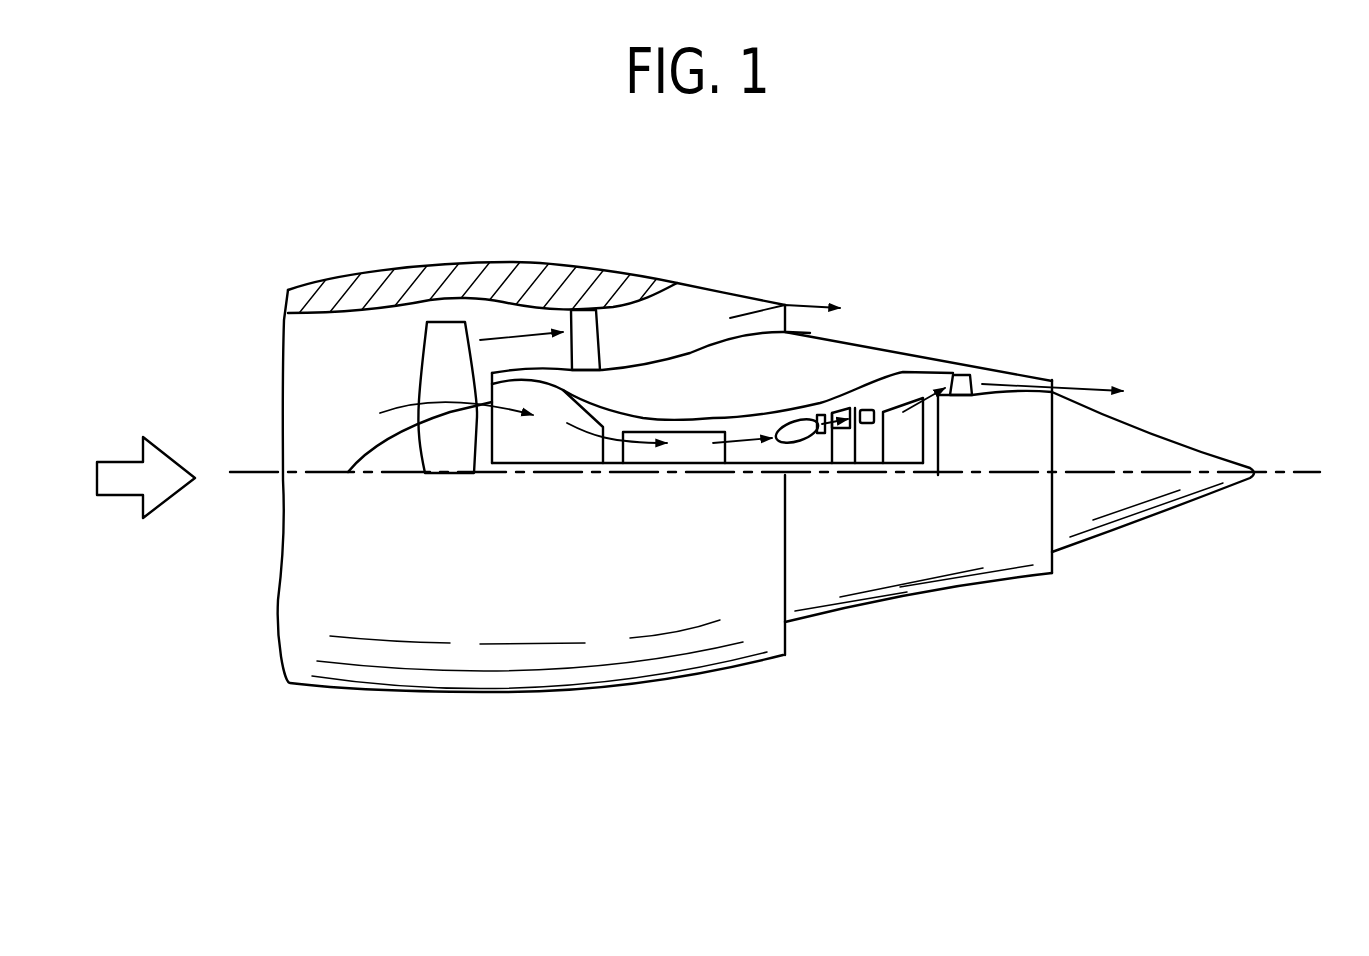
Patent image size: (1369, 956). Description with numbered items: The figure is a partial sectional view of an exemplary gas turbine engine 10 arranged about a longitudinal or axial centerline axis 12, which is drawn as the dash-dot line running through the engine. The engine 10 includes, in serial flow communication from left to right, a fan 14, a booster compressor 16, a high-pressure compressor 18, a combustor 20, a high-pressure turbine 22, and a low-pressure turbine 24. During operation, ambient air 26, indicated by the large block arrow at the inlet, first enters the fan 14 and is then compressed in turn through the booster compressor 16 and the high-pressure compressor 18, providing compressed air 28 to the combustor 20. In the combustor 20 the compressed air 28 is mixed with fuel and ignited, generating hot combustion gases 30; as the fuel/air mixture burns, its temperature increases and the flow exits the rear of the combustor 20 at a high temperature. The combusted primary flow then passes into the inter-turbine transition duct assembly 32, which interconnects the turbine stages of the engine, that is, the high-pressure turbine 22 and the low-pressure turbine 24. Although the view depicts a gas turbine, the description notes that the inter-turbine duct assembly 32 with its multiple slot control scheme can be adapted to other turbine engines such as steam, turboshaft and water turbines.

The gas turbine engine 10 is at (335, 198).
The longitudinal or axial centerline axis 12 is at (1278, 473).
The fan 14 is at (430, 357).
The booster compressor 16 is at (556, 452).
The high-pressure compressor 18 is at (681, 450).
The combustor 20 is at (785, 420).
The high-pressure turbine 22 is at (845, 412).
The low-pressure turbine 24 is at (903, 402).
The ambient air 26 is at (118, 462).
The compressed air 28 is at (740, 443).
The hot combustion gases 30 is at (838, 428).
The inter-turbine transition duct assembly 32 is at (867, 410).